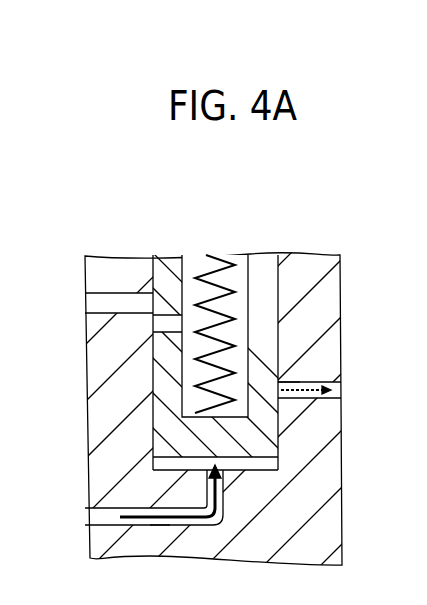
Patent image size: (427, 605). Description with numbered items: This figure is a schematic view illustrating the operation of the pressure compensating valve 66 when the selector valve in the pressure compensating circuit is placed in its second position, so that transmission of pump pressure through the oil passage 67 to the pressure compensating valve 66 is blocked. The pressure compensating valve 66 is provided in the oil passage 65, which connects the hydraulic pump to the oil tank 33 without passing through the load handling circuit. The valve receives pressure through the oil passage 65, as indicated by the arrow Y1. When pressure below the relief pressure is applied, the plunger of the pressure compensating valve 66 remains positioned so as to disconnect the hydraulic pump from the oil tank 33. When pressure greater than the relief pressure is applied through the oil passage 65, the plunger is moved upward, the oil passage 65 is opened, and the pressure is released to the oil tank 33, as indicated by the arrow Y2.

The pressure compensating valve 66 is at (298, 249).
The oil passage 67 is at (73, 302).
The oil passage 65 is at (73, 518).
The oil tank 33 is at (357, 390).
The arrow Y1 is at (159, 522).
The arrow Y2 is at (302, 381).